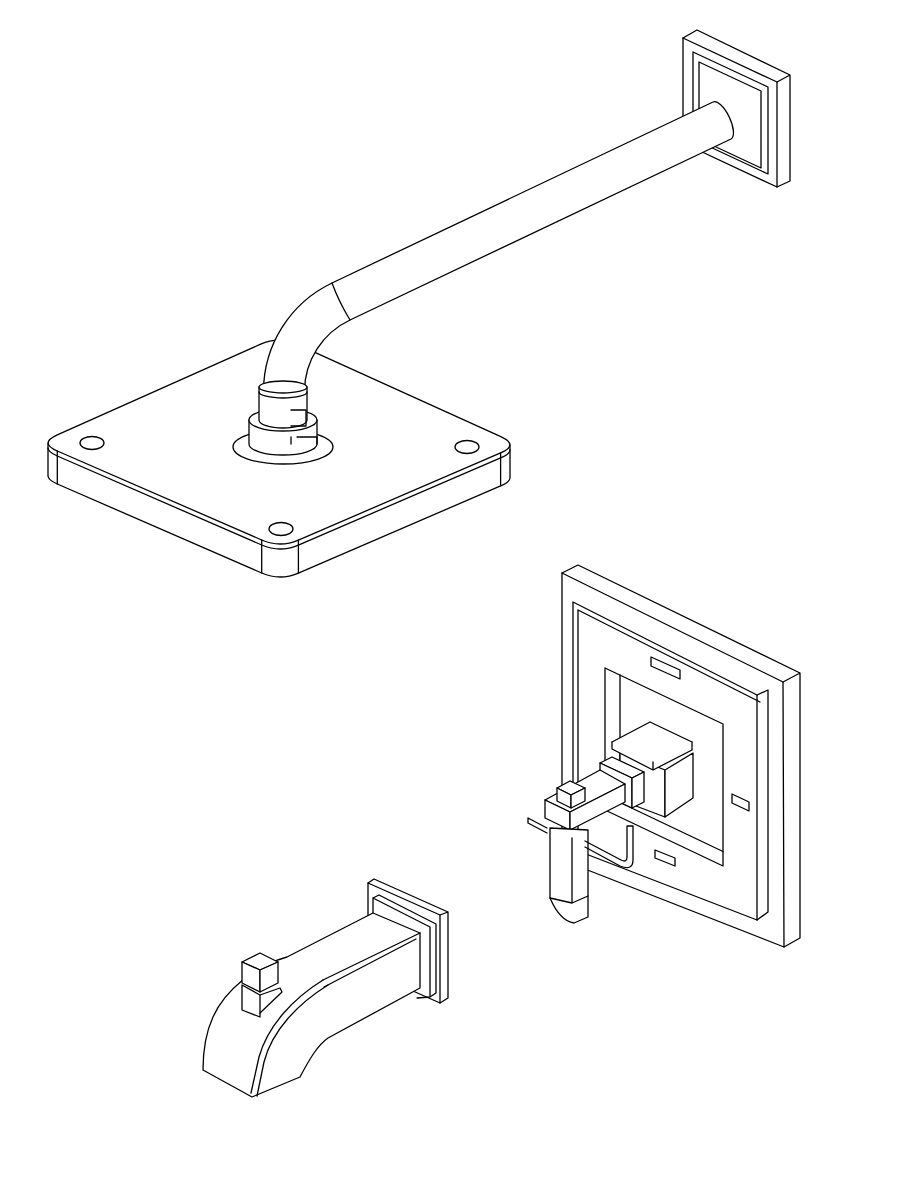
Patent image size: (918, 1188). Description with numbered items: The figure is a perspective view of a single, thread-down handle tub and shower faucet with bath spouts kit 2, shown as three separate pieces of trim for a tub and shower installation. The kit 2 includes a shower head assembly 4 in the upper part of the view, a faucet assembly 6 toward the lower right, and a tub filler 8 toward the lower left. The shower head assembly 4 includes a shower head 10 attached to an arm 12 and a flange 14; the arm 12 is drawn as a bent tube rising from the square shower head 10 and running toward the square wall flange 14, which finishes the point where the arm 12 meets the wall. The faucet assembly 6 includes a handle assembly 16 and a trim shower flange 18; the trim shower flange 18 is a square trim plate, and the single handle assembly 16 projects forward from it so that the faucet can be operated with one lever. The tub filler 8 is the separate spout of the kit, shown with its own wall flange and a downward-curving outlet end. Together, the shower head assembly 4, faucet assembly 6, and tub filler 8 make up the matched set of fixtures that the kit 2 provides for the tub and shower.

The tub and shower faucet with bath spouts kit 2 is at (776, 477).
The shower head assembly 4 is at (291, 240).
The faucet assembly 6 is at (661, 555).
The tub filler 8 is at (313, 910).
The shower head 10 is at (420, 417).
The arm 12 is at (502, 207).
The flange 14 is at (793, 119).
The handle assembly 16 is at (643, 834).
The trim shower flange 18 is at (688, 617).